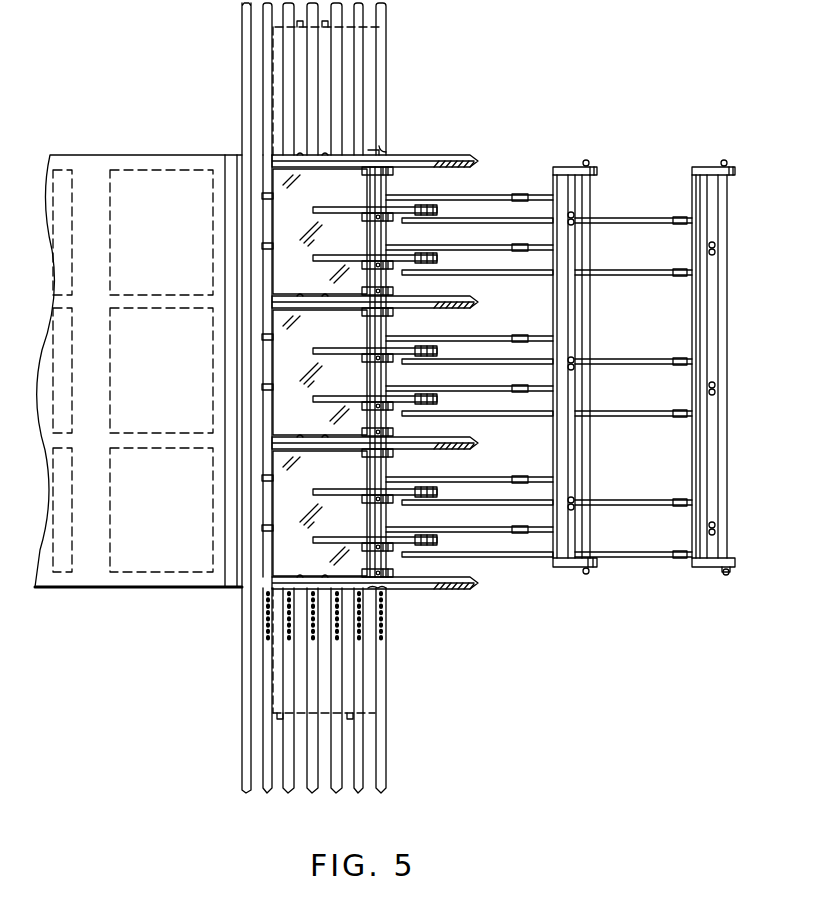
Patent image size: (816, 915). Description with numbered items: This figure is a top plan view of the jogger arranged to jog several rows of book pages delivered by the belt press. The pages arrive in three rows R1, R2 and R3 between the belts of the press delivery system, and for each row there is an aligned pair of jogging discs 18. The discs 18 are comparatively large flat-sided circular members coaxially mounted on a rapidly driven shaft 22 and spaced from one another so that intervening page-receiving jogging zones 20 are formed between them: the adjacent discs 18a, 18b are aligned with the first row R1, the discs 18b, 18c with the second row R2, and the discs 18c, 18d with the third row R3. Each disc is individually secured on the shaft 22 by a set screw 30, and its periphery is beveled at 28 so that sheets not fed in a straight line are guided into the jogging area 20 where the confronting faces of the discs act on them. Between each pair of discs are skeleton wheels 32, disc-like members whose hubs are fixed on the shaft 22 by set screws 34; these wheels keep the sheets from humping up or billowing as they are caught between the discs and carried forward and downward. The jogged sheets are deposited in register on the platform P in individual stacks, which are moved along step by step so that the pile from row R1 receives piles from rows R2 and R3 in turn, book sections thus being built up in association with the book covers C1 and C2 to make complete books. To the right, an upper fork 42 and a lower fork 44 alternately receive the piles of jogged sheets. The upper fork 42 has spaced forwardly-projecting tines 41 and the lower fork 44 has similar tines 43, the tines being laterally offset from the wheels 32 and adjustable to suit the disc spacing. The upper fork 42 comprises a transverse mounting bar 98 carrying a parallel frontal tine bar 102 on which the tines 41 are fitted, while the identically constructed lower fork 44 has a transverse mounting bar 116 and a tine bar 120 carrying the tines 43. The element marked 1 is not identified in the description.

The plate 1 is at (358, 727).
The platform P is at (394, 771).
The book cover C1 is at (268, 698).
The book cover C2 is at (270, 87).
The first row of pages R1 is at (104, 509).
The second row of pages R2 is at (102, 384).
The third row of pages R3 is at (104, 247).
The jogging discs 18 is at (377, 360).
The jogging disc 18a is at (440, 589).
The jogging disc 18b is at (440, 449).
The jogging disc 18c is at (440, 308).
The jogging disc 18d is at (437, 168).
The jogging zone 20 is at (290, 222).
The shaft 22 is at (370, 190).
The peripheral bevel 28 is at (478, 158).
The set screws 30 is at (383, 166).
The skeleton wheels 32 is at (418, 214).
The set screws 34 is at (380, 256).
The tines 41 is at (500, 194).
The upper fork 42 is at (587, 363).
The tines 43 is at (652, 273).
The lower fork 44 is at (719, 359).
The transverse mounting bar 98 is at (590, 196).
The tine bar 102 is at (565, 260).
The transverse mounting bar 116 is at (724, 572).
The tine bar 120 is at (706, 262).